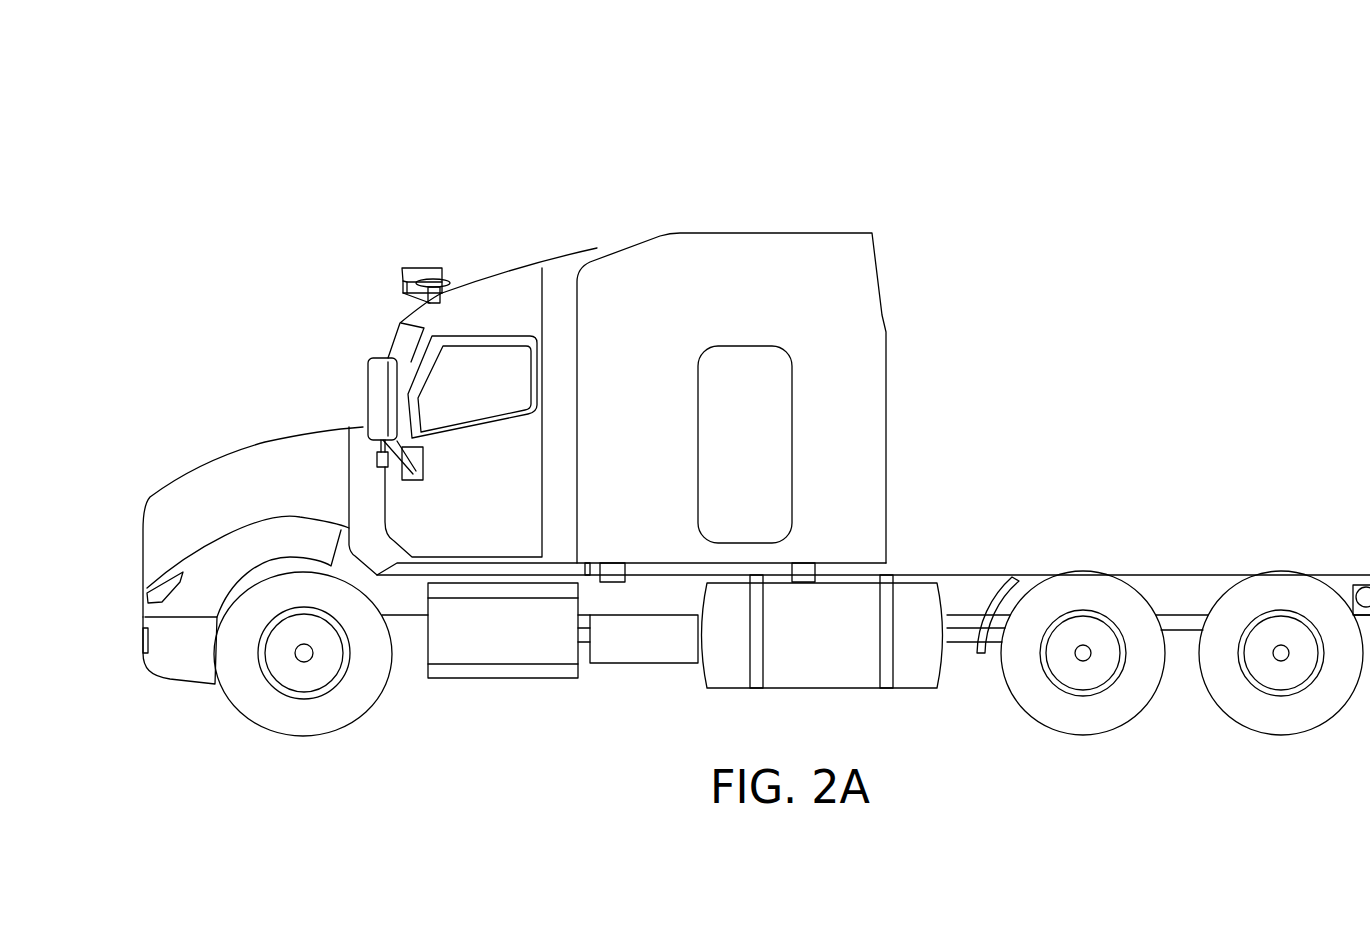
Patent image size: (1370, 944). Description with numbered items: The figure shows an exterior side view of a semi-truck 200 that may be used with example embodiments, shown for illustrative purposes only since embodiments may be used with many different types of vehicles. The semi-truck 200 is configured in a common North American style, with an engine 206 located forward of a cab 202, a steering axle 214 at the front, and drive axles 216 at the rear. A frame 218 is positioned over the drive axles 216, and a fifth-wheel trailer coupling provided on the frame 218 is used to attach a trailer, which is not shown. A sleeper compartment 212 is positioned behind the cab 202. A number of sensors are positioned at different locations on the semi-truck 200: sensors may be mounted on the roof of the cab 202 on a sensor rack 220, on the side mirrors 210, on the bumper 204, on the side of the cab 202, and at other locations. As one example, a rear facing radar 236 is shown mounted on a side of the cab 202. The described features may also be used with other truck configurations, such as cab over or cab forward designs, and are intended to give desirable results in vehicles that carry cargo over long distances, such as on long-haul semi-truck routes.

The semi-truck 200 is at (452, 138).
The cab 202 is at (488, 268).
The bumper 204 is at (137, 662).
The engine 206 is at (237, 448).
The side mirrors 210 is at (377, 357).
The sleeper compartment 212 is at (753, 233).
The steering axle 214 is at (350, 693).
The drive axles 216 is at (1083, 717).
The frame 218 is at (1188, 573).
The sensor rack 220 is at (417, 260).
The rear facing radar 236 is at (595, 560).